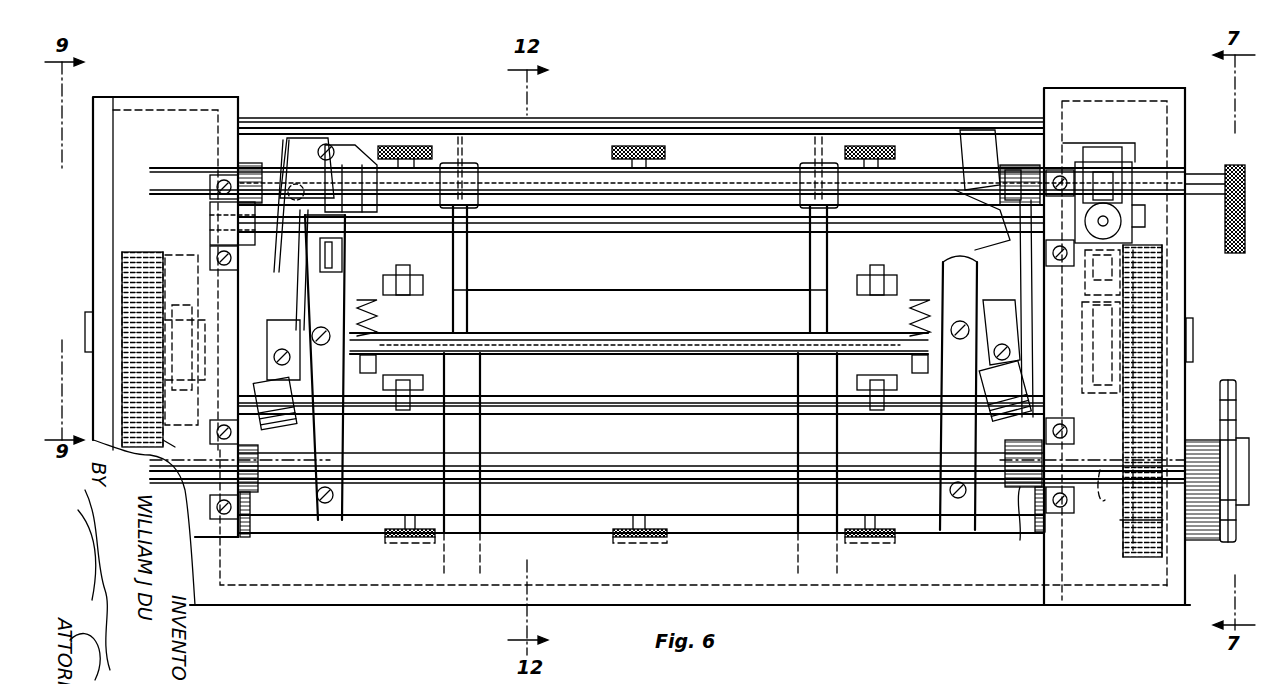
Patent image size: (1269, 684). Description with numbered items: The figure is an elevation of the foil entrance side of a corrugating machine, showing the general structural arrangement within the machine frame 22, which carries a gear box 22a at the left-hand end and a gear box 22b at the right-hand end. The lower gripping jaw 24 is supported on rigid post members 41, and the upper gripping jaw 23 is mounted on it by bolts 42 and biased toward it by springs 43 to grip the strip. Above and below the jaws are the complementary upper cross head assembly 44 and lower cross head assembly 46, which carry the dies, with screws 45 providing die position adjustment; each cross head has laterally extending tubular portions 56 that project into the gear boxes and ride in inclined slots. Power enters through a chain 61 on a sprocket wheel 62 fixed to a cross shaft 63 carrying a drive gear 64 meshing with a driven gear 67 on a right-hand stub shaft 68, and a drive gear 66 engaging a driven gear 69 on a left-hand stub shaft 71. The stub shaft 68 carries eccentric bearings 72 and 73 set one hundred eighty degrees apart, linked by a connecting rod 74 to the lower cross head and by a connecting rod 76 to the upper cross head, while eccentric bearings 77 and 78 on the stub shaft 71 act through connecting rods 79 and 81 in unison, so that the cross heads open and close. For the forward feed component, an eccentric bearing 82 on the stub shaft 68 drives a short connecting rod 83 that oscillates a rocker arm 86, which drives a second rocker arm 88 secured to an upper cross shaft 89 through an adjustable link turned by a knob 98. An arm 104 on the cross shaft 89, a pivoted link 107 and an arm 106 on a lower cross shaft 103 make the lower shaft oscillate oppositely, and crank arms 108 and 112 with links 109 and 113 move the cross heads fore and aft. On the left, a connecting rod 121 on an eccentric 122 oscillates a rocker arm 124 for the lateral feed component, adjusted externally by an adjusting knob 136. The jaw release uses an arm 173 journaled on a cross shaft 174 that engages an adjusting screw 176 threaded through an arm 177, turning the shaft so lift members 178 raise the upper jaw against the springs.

The machine frame 22 is at (930, 605).
The gear box 22a is at (181, 82).
The gear box 22b is at (1096, 85).
The upper gripping jaw 23 is at (666, 334).
The lower gripping jaw 24 is at (672, 355).
The rigid post members 41 is at (468, 430).
The bolts 42 is at (376, 364).
The springs 43 is at (378, 322).
The upper cross head assembly 44 is at (638, 266).
The screws 45 is at (434, 152).
The lower cross head assembly 46 is at (641, 435).
The tubular portions 56 is at (965, 150).
The chain 61 is at (1232, 383).
The sprocket wheel 62 is at (1232, 541).
The cross shaft 63 is at (1105, 494).
The drive gear 64 is at (1120, 540).
The drive gear 66 is at (163, 442).
The driven gear 67 is at (1160, 285).
The stub shaft 68 is at (1193, 340).
The driven gear 69 is at (122, 244).
The stub shaft 71 is at (85, 340).
The eccentric bearing 72 is at (945, 225).
The eccentric bearing 73 is at (1001, 324).
The connecting rod 74 is at (958, 393).
The connecting rod 76 is at (1006, 308).
The eccentric bearing 77 is at (268, 310).
The eccentric bearing 78 is at (298, 310).
The connecting rod 79 is at (275, 389).
The connecting rod 81 is at (325, 367).
The eccentric bearing 82 is at (1099, 332).
The connecting rod 83 is at (1103, 346).
The rocker arm 86 is at (1175, 265).
The rocker arm 88 is at (1098, 160).
The cross shaft 89 is at (575, 230).
The knob 98 is at (1121, 215).
The cross shaft 103 is at (562, 478).
The arm 104 is at (1012, 180).
The arm 106 is at (1020, 540).
The pivoted link 107 is at (1020, 428).
The crank arm 108 is at (400, 252).
The link 109 is at (424, 278).
The crank arm 112 is at (440, 478).
The link 113 is at (455, 378).
The connecting rod 121 is at (182, 305).
The eccentric 122 is at (185, 366).
The rocker arm 124 is at (182, 255).
The adjusting knob 136 is at (1233, 165).
The arm 173 is at (318, 218).
The cross shaft 174 is at (552, 180).
The adjusting screw 176 is at (325, 143).
The arm 177 is at (352, 145).
The lift members 178 is at (470, 262).